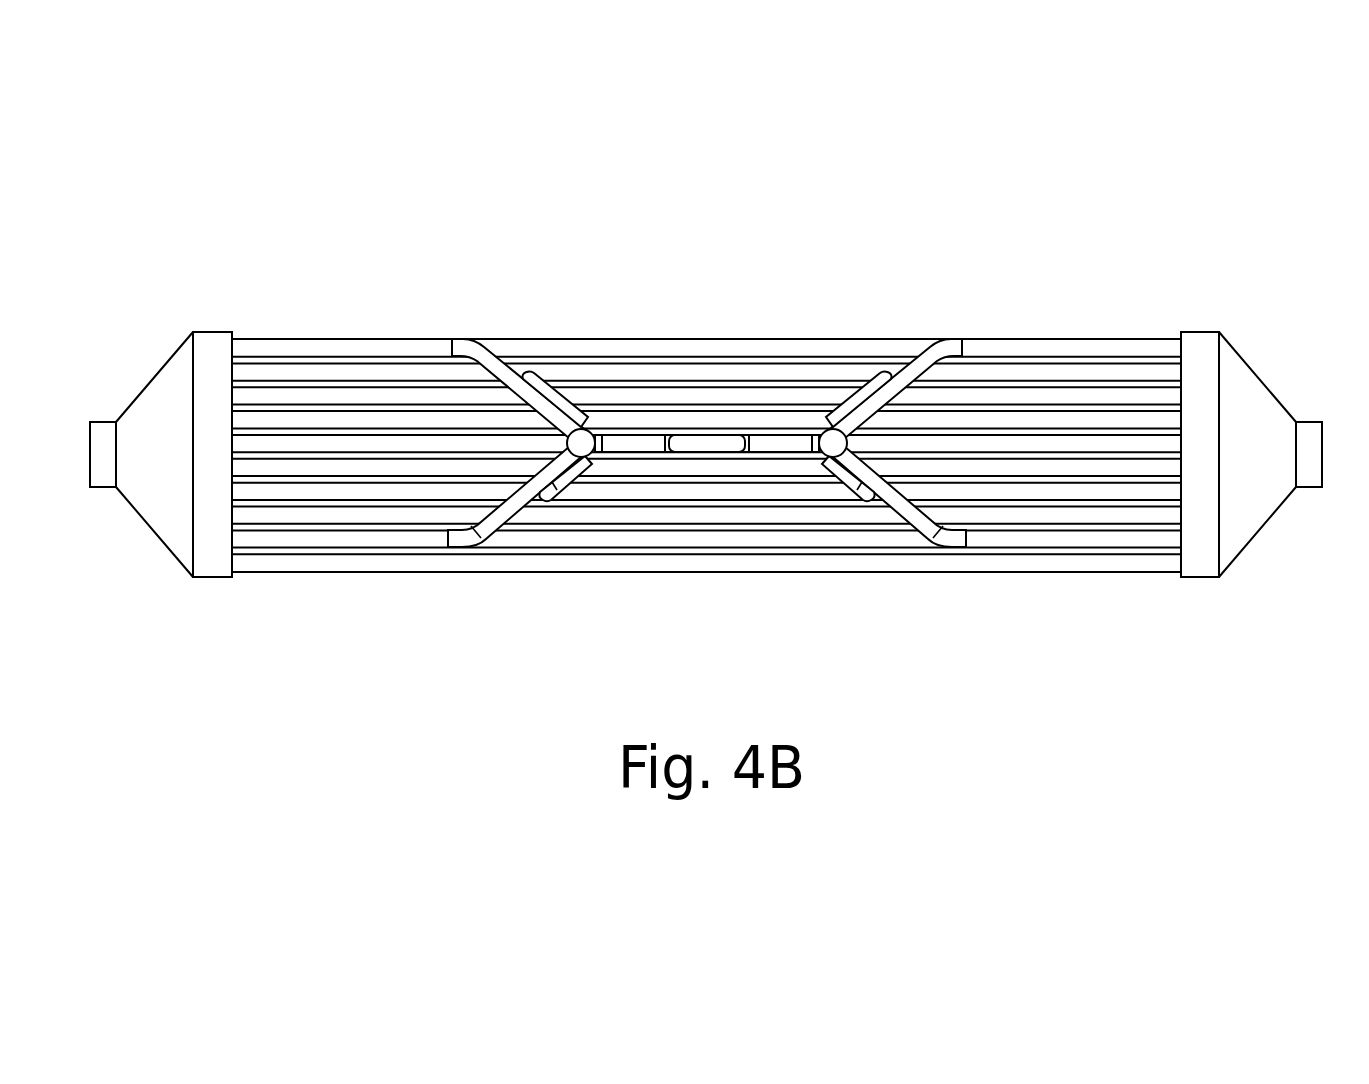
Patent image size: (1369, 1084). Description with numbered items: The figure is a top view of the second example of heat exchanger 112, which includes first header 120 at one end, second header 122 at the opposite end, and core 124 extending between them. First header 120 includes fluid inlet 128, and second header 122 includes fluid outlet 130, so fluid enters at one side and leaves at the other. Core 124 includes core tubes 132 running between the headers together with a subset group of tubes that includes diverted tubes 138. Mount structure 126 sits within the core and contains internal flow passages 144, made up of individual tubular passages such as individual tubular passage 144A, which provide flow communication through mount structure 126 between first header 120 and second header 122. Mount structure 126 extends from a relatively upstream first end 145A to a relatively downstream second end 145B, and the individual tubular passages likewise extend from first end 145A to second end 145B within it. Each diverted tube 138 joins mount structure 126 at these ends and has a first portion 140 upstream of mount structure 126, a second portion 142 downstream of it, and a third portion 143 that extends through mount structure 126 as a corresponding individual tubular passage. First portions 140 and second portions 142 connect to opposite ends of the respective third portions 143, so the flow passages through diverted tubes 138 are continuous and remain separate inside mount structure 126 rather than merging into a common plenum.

The heat exchanger 112 is at (328, 158).
The first header 120 is at (163, 320).
The second header 122 is at (1230, 312).
The core 124 is at (824, 600).
The mount structure 126 is at (692, 430).
The fluid inlet 128 is at (103, 432).
The fluid outlet 130 is at (1308, 433).
The core tubes 132 is at (328, 397).
The diverted tubes 138 is at (477, 349).
The first portion 140 is at (523, 388).
The second portion 142 is at (870, 408).
The third portion 143 is at (746, 436).
The internal flow passages 144 is at (645, 443).
The individual tubular passage 144A is at (718, 443).
The first end 145A is at (585, 428).
The second end 145B is at (829, 445).